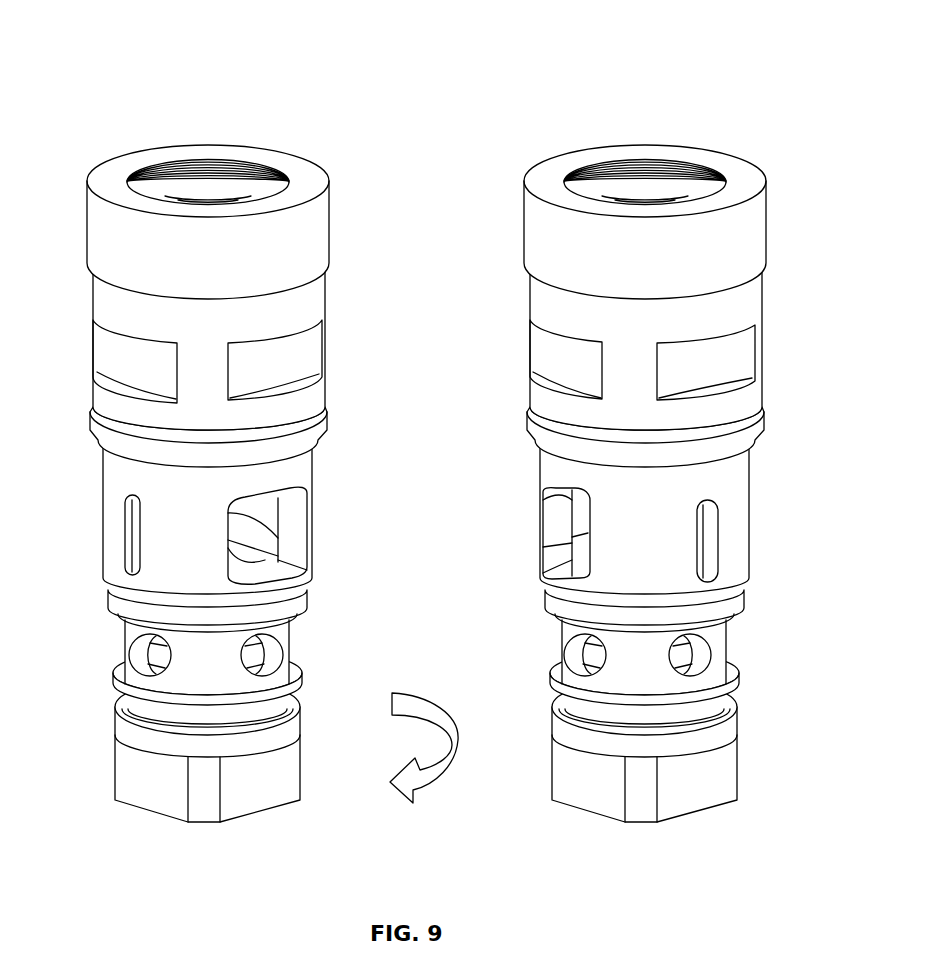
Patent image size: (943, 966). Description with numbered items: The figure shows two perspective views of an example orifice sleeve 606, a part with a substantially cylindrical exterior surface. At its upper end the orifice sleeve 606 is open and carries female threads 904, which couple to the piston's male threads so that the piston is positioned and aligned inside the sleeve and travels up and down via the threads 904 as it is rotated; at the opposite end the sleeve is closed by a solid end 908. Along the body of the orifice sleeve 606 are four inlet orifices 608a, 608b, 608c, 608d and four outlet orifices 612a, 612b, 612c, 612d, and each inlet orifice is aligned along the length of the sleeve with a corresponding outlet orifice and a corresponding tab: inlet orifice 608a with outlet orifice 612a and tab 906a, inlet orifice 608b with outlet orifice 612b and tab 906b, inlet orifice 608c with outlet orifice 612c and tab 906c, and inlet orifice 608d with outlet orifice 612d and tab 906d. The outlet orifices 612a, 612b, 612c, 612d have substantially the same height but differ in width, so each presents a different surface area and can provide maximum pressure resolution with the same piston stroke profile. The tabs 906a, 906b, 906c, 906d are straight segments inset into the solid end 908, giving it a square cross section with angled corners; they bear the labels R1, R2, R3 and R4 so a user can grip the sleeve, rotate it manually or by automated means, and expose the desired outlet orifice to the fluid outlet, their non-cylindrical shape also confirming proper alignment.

The orifice sleeve 606 is at (144, 51).
The threads 904 is at (148, 180).
The outlet orifice 612a is at (122, 528).
The outlet orifice 612b is at (713, 520).
The outlet orifice 612c is at (545, 547).
The outlet orifice 612d is at (300, 530).
The inlet orifice 608a is at (123, 653).
The inlet orifice 608b is at (713, 660).
The inlet orifice 608c is at (567, 658).
The inlet orifice 608d is at (293, 677).
The solid end 908 is at (300, 773).
The tab 906a is at (143, 797).
The tab 906b is at (690, 797).
The tab 906c is at (577, 797).
The tab 906d is at (260, 797).